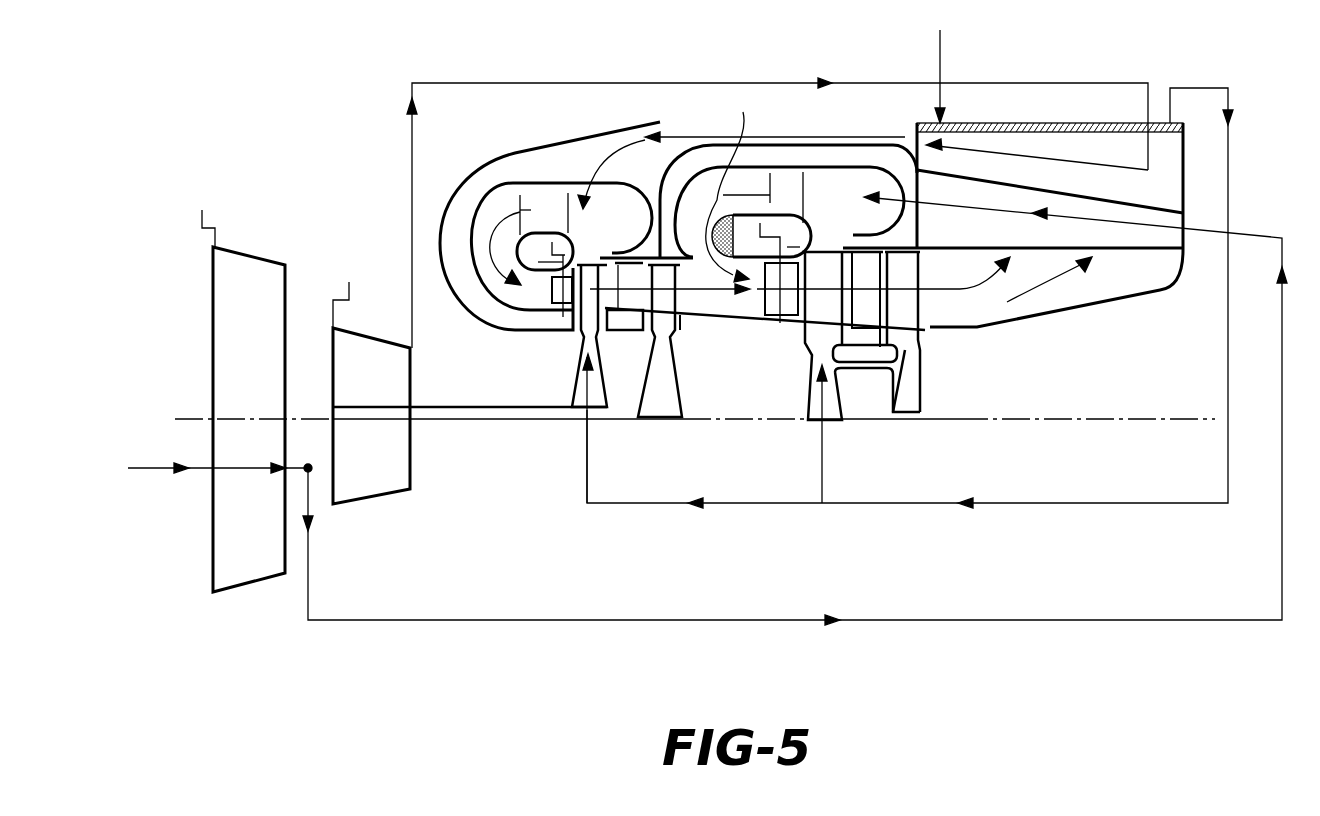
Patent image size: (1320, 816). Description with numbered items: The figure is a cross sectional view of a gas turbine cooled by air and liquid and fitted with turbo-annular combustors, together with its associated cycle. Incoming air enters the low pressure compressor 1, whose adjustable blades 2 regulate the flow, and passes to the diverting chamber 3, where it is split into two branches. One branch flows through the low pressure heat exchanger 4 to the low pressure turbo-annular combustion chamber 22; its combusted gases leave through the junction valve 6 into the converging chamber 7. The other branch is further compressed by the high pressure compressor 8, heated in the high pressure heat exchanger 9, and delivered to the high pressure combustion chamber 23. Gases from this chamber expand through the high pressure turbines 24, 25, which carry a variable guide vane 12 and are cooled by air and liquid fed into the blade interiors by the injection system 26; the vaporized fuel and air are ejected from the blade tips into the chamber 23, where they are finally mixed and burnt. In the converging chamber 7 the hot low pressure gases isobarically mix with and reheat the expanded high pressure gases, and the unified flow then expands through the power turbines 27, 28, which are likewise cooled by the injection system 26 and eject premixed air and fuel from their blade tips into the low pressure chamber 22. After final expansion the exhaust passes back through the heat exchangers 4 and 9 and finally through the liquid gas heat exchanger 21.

The low pressure compressor 1 is at (208, 573).
The adjustable blades 2 is at (205, 218).
The diverting chamber 3 is at (314, 460).
The low pressure heat exchanger 4 is at (1150, 240).
The junction valve 6 is at (758, 209).
The converging chamber 7 is at (727, 308).
The high pressure compressor 8 is at (382, 485).
The high pressure heat exchanger 9 is at (1172, 177).
The variable guide vane 12 is at (552, 292).
The liquid gas heat exchanger 21 is at (1045, 120).
The low pressure turbo-annular combustion chamber 22 is at (757, 183).
The high pressure combustion chamber 23 is at (543, 207).
The high pressure turbine 24 is at (572, 400).
The high pressure turbine 25 is at (668, 412).
The injection system 26 is at (590, 475).
The power turbine 27 is at (808, 403).
The power turbine 28 is at (922, 393).